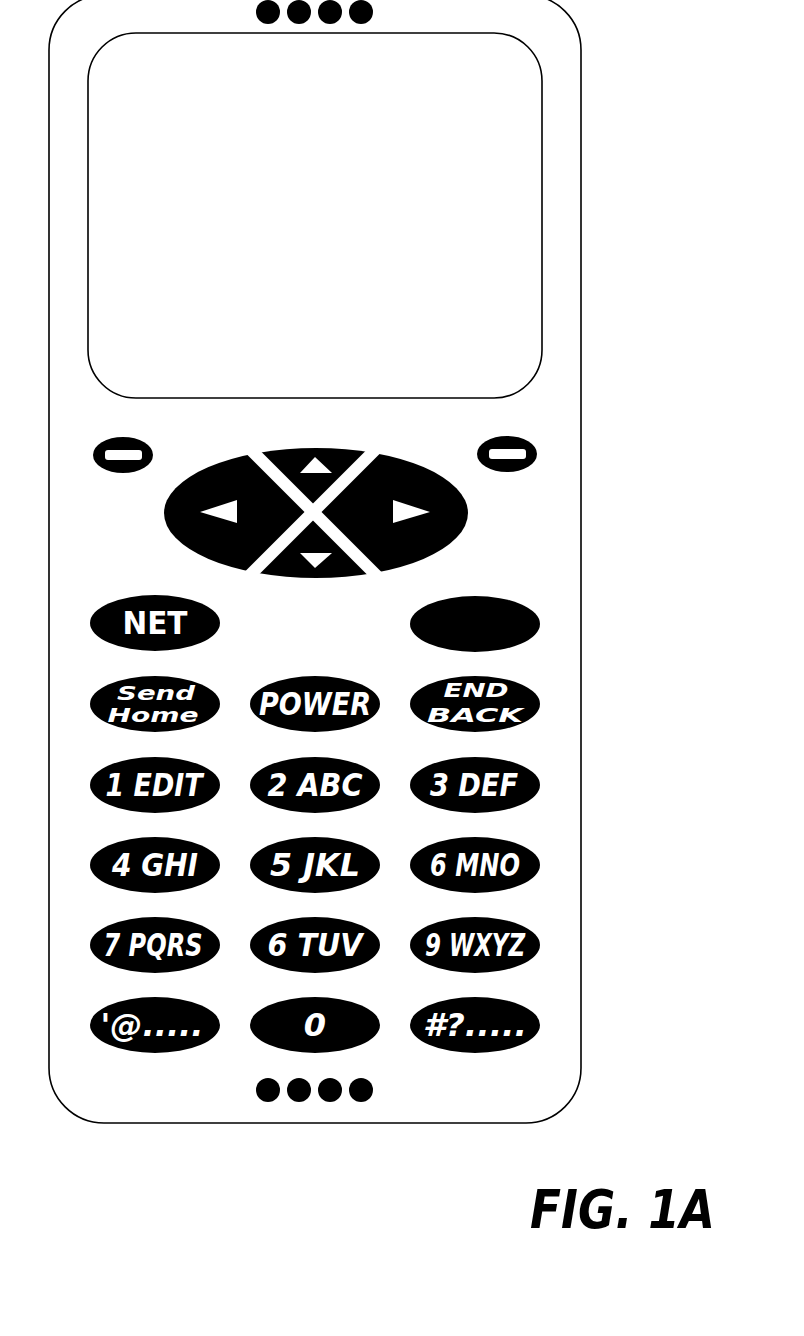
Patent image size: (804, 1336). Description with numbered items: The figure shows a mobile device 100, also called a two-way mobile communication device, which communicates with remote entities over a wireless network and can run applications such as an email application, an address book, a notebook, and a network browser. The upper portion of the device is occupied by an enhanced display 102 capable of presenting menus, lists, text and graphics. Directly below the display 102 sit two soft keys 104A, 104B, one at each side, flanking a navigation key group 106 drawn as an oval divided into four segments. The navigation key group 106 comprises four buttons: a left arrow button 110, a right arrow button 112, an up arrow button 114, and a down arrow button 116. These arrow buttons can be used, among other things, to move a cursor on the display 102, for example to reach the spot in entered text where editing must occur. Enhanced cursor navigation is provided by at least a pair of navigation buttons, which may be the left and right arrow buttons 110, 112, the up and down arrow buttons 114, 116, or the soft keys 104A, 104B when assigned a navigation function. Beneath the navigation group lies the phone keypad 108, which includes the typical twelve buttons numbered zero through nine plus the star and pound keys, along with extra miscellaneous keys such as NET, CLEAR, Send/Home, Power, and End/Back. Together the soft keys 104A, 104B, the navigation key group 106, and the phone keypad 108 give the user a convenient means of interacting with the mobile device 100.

The mobile device 100 is at (581, 180).
The enhanced display 102 is at (482, 227).
The soft key 104A is at (125, 438).
The soft key 104B is at (497, 440).
The navigation key group 106 is at (482, 516).
The phone keypad 108 is at (540, 611).
The left arrow button 110 is at (165, 508).
The right arrow button 112 is at (455, 542).
The up arrow button 114 is at (325, 448).
The down arrow button 116 is at (310, 580).